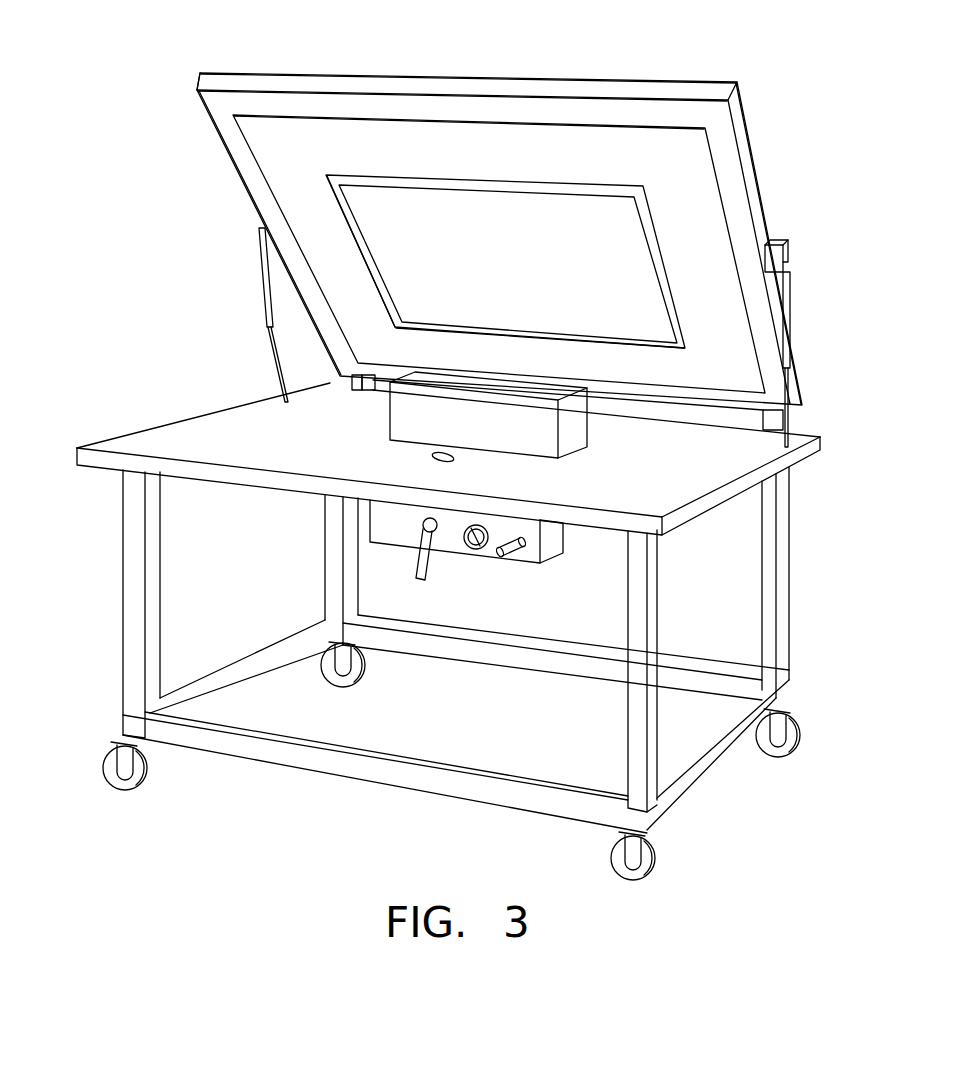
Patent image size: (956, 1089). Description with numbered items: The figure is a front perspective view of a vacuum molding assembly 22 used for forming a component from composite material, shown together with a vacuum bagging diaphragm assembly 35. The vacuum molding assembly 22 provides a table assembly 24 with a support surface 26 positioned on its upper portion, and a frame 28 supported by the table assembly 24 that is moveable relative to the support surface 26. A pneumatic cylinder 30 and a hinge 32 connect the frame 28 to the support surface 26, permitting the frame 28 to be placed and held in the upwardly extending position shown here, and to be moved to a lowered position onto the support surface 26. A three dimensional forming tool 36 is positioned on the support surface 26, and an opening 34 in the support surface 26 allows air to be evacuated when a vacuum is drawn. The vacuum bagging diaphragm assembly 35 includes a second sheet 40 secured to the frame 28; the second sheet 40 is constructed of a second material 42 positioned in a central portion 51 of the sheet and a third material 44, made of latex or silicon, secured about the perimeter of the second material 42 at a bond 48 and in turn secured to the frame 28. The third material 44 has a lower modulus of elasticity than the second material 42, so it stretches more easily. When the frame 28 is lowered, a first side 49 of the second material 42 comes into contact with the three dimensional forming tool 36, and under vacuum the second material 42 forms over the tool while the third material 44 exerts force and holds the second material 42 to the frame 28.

The vacuum molding assembly 22 is at (316, 58).
The table assembly 24 is at (110, 610).
The support surface 26 is at (155, 442).
The frame 28 is at (225, 100).
The pneumatic cylinder 30 is at (268, 260).
The hinge 32 is at (777, 243).
The opening 34 is at (455, 462).
The vacuum bagging diaphragm assembly 35 is at (535, 155).
The three dimensional forming tool 36 is at (410, 400).
The second sheet 40 is at (778, 408).
The second material 42 is at (525, 265).
The third material 44 is at (422, 136).
The bond 48 is at (617, 192).
The first side 49 is at (463, 306).
The central portion 51 is at (430, 253).